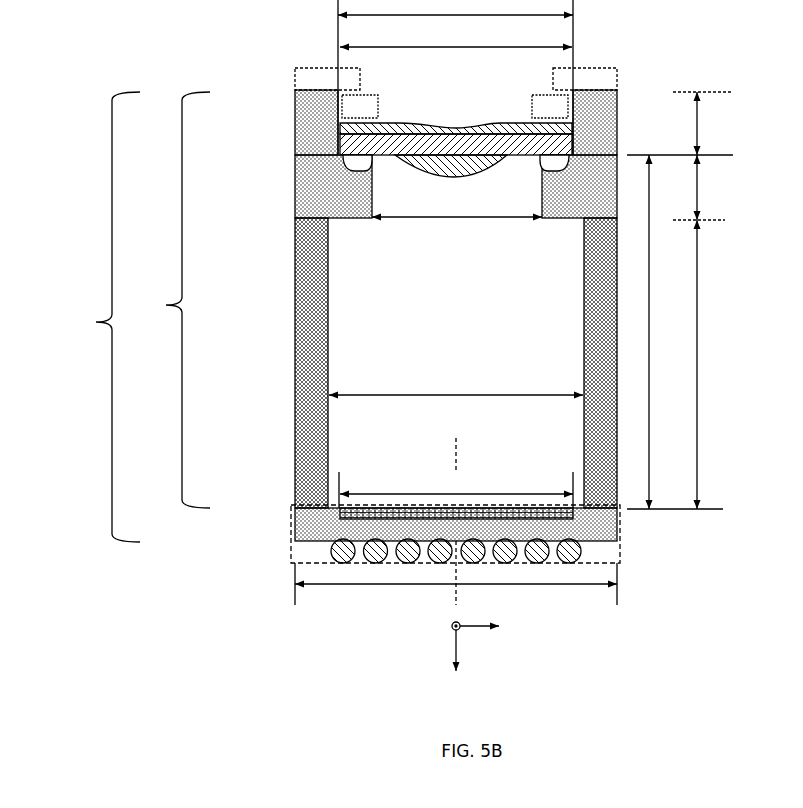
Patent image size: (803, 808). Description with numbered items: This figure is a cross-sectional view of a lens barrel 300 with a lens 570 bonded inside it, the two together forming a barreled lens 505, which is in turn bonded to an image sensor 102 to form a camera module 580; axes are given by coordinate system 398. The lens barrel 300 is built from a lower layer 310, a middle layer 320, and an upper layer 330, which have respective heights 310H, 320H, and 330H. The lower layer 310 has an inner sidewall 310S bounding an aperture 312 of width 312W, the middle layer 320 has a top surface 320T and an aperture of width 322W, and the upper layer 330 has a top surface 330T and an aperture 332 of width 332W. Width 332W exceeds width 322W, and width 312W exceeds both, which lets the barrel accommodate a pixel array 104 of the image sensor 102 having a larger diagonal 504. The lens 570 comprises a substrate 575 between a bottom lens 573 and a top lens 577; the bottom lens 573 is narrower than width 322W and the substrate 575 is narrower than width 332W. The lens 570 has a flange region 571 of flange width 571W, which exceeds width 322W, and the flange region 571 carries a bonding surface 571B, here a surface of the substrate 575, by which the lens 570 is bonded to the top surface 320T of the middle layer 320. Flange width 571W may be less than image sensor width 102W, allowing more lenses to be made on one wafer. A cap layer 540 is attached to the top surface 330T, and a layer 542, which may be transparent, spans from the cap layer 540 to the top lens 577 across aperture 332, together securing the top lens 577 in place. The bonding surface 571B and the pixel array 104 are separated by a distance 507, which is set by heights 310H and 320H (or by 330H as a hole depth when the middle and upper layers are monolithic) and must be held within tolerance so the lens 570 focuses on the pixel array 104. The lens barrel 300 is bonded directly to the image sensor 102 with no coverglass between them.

The image sensor 102 is at (621, 537).
The image sensor width 102W is at (456, 584).
The pixel array 104 is at (456, 524).
The lens barrel 300 is at (266, 206).
The lower layer 310 is at (295, 329).
The inner sidewall 310S is at (331, 347).
The height 310H is at (675, 364).
The aperture 312 is at (456, 338).
The width 312W is at (456, 395).
The middle layer 320 is at (456, 186).
The top surface 320T is at (344, 152).
The height 320H is at (700, 187).
The width 322W is at (457, 217).
The upper layer 330 is at (456, 122).
The top surface 330T is at (312, 87).
The height 330H is at (680, 123).
The aperture 332 is at (457, 86).
The width 332W is at (455, 77).
The coordinate system 398 is at (514, 662).
The diagonal 504 is at (456, 521).
The barreled lens 505 is at (167, 300).
The distance 507 is at (647, 332).
The cap layer 540 is at (293, 76).
The layer 542 is at (455, 106).
The lens 570 is at (444, 118).
The flange region 571 is at (456, 177).
The bonding surface 571B is at (397, 159).
The flange width 571W is at (456, 47).
The bottom lens 573 is at (451, 166).
The substrate 575 is at (456, 144).
The top lens 577 is at (483, 124).
The camera module 580 is at (97, 317).